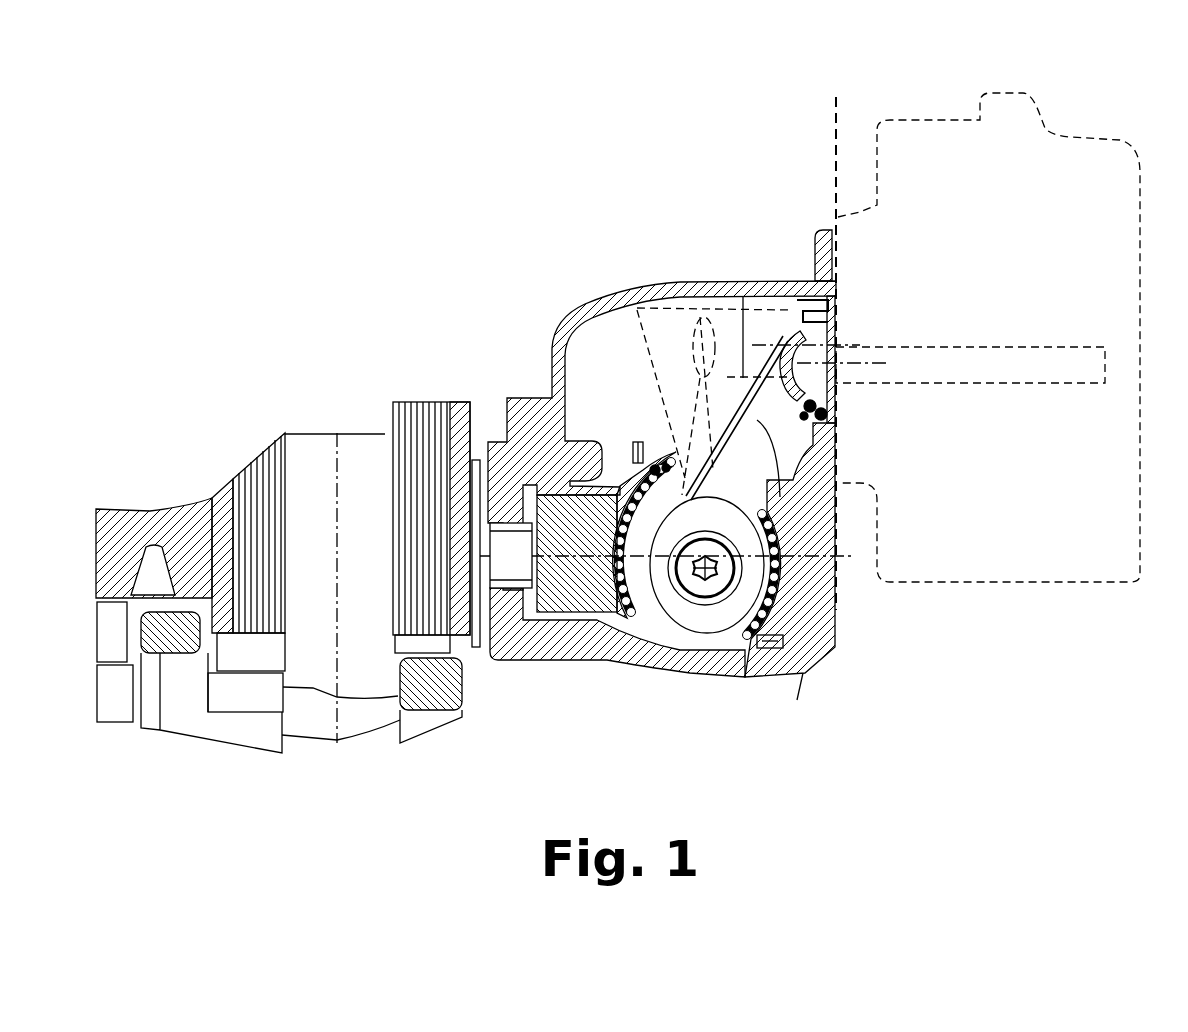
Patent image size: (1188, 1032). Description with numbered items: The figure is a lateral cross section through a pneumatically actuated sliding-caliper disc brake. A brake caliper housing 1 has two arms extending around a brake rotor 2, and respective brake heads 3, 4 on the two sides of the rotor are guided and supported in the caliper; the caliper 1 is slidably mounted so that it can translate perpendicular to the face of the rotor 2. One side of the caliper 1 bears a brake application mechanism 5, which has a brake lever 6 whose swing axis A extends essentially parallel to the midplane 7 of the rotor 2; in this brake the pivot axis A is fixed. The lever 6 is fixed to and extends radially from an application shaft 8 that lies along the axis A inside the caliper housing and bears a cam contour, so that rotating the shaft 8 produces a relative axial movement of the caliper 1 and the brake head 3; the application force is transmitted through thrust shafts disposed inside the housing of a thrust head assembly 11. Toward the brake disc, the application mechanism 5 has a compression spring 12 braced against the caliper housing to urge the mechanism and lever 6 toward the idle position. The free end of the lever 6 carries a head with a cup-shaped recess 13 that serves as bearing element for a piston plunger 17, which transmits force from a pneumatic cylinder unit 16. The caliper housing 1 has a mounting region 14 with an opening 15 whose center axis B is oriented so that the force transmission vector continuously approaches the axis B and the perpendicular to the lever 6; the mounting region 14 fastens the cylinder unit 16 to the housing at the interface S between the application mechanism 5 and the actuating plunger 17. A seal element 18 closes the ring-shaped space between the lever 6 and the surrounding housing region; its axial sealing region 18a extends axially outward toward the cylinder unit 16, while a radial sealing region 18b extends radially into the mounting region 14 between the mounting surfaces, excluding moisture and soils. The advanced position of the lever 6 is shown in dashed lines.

The brake caliper housing 1 is at (547, 348).
The brake rotor 2 is at (362, 466).
The brake head 3 is at (422, 401).
The brake head 4 is at (258, 468).
The brake application mechanism 5 is at (615, 367).
The brake lever 6 is at (580, 326).
The midplane of the brake rotor 7 is at (337, 432).
The application shaft 8 is at (685, 635).
The thrust head assembly 11 is at (577, 588).
The compression spring 12 is at (507, 594).
The recess in brake lever head 13 is at (797, 298).
The mounting region on caliper housing 14 is at (838, 450).
The opening in caliper housing 15 is at (752, 285).
The pneumatic cylinder unit 16 is at (1093, 545).
The piston plunger 17 is at (977, 363).
The seal element 18 is at (846, 305).
The axial sealing region 18a is at (838, 428).
The radial sealing region 18b is at (744, 440).
The swing axis of brake lever A is at (707, 600).
The center axis of opening B is at (780, 282).
The interface between brake application mechanism and actuating device S is at (842, 120).